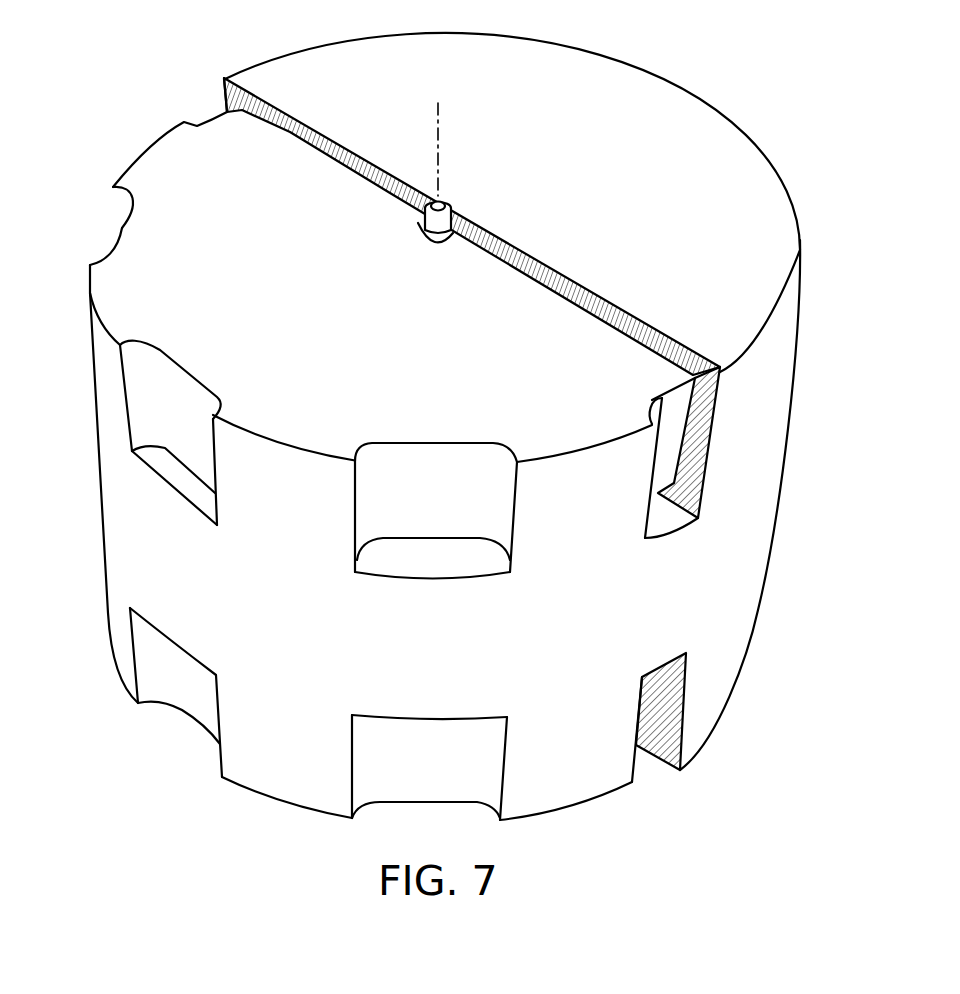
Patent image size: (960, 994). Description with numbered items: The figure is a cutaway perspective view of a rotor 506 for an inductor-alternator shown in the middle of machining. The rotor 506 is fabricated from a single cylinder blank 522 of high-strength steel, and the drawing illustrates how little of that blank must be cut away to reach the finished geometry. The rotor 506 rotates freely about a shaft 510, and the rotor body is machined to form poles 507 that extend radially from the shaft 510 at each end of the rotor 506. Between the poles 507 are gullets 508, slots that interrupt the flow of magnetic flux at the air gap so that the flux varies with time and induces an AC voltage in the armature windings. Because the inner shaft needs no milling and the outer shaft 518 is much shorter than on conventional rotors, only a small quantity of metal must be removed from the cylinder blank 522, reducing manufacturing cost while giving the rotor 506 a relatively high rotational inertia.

The rotor 506 is at (826, 417).
The cylinder blank 522 is at (743, 127).
The shaft 510 is at (450, 207).
The outer shaft 518 is at (422, 218).
The pole 507 is at (282, 450).
The gullet 508 is at (427, 457).